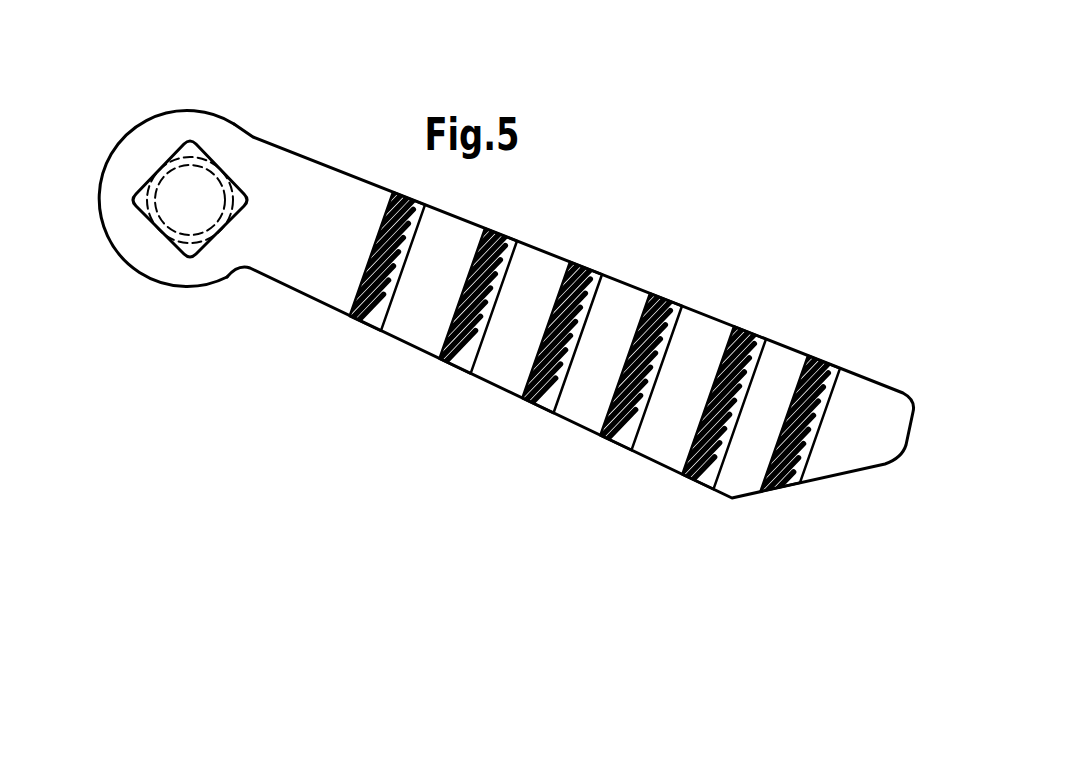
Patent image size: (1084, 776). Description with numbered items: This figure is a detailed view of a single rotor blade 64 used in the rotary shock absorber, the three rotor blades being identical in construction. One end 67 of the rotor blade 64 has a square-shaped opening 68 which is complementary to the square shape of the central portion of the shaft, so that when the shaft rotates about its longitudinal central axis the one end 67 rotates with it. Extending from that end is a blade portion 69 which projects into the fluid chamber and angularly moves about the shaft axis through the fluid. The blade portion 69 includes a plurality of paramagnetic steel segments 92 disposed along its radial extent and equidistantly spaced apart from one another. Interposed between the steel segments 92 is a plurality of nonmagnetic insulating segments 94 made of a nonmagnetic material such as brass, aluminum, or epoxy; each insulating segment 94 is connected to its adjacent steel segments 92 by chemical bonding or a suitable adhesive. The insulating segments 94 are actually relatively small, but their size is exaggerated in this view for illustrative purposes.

The rotor blade 64 is at (570, 311).
The one end 67 is at (150, 112).
The square-shaped opening 68 is at (178, 242).
The blade portion 69 is at (490, 387).
The paramagnetic steel segments 92 is at (635, 354).
The nonmagnetic insulating segments 94 is at (663, 315).